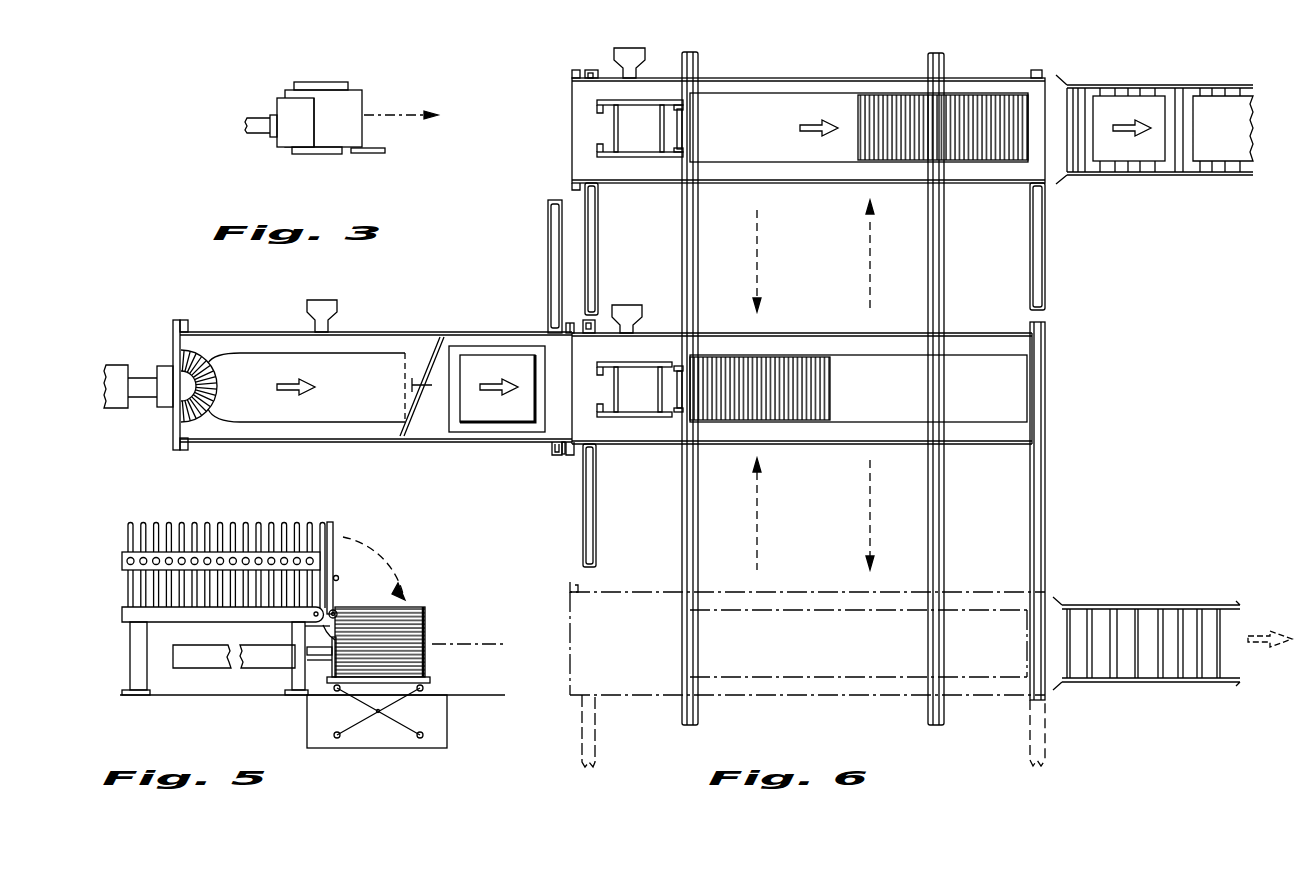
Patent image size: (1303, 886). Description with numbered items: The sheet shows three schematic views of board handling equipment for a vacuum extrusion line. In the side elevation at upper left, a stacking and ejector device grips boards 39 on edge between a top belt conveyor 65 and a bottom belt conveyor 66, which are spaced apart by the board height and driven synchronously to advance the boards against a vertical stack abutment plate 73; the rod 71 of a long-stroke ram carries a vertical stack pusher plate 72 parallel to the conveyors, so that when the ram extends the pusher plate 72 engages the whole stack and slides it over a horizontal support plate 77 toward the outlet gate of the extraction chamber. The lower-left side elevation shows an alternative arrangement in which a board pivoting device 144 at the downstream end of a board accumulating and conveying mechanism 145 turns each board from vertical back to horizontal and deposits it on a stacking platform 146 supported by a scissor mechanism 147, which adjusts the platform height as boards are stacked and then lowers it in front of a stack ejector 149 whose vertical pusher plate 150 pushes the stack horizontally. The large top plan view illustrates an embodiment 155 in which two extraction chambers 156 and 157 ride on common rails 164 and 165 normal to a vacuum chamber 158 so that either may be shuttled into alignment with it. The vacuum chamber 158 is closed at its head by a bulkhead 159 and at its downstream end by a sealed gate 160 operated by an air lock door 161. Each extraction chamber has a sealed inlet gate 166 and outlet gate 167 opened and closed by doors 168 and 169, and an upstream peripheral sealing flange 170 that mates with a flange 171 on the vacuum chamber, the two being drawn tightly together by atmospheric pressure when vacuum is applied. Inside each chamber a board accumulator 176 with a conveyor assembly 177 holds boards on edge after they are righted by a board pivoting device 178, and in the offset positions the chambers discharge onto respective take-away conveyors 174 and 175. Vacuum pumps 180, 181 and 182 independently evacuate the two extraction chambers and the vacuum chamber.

In FIG. 3, the board 39 is at (362, 97).
In FIG. 3, the top belt conveyor 65 is at (300, 82).
In FIG. 3, the bottom belt conveyor 66 is at (298, 155).
In FIG. 3, the rod 71 is at (258, 137).
In FIG. 3, the stack pusher plate 72 is at (277, 103).
In FIG. 3, the stack abutment plate 73 is at (316, 130).
In FIG. 3, the horizontal support plate 77 is at (378, 154).
In FIG. 5, the board pivoting device 144 is at (342, 570).
In FIG. 5, the board accumulating and conveying mechanism 145 is at (183, 512).
In FIG. 5, the stacking table or platform 146 is at (430, 681).
In FIG. 5, the scissor mechanism 147 is at (356, 732).
In FIG. 5, the stack ejector 149 is at (268, 672).
In FIG. 5, the vertical pusher plate 150 is at (325, 672).
In FIG. 6, the embodiment with transversely movable extraction chambers 155 is at (1066, 322).
In FIG. 6, the extraction chamber 156 is at (746, 77).
In FIG. 6, the extraction chamber 157 is at (794, 448).
In FIG. 6, the vacuum chamber 158 is at (398, 332).
In FIG. 6, the bulkhead 159 is at (174, 328).
In FIG. 6, the sealed gate 160 is at (552, 449).
In FIG. 6, the air lock door 161 is at (548, 271).
In FIG. 6, the rail 164 is at (698, 252).
In FIG. 6, the rail 165 is at (928, 500).
In FIG. 6, the sealed inlet gate 166 is at (585, 73).
In FIG. 6, the sealed outlet gate 167 is at (596, 326).
In FIG. 6, the door 168 is at (598, 206).
In FIG. 6, the door 169 is at (596, 515).
In FIG. 6, the peripheral sealing flange 170 is at (572, 187).
In FIG. 6, the flange 171 is at (566, 450).
In FIG. 6, the board take-away conveyor 174 is at (1148, 86).
In FIG. 6, the board take-away conveyor 175 is at (1100, 605).
In FIG. 6, the board accumulator 176 is at (793, 166).
In FIG. 6, the conveyor assembly 177 is at (735, 163).
In FIG. 6, the board pivoting device 178 is at (600, 128).
In FIG. 6, the vacuum pump 180 is at (614, 52).
In FIG. 6, the vacuum pump 181 is at (642, 311).
In FIG. 6, the vacuum pump 182 is at (322, 300).